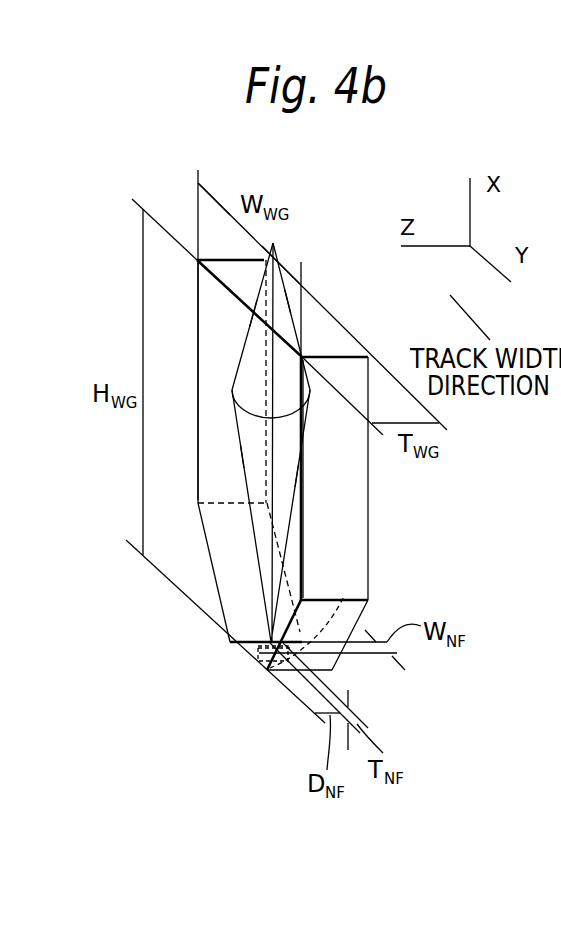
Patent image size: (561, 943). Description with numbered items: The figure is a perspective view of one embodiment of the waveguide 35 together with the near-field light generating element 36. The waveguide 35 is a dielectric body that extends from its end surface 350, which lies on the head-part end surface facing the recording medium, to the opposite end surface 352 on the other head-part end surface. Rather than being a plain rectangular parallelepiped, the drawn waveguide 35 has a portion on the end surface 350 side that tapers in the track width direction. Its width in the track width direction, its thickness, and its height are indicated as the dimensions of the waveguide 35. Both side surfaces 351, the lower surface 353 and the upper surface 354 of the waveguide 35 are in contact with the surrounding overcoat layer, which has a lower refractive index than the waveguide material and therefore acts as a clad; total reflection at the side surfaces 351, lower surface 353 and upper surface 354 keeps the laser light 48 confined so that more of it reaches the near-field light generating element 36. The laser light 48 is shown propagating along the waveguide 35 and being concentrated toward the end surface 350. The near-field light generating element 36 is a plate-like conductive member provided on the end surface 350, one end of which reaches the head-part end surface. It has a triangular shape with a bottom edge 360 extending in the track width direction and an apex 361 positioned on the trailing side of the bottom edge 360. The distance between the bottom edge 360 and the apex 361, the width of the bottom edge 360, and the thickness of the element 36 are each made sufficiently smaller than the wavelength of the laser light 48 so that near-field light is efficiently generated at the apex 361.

The waveguide 35 is at (121, 460).
The side surfaces 351 is at (225, 375).
The opposite end surface 352 is at (320, 322).
The lower surface 353 is at (335, 450).
The upper surface 354 is at (225, 520).
The end surface 350 is at (300, 672).
The bottom edge 360 is at (343, 598).
The apex 361 is at (258, 652).
The near-field light generating element 36 is at (258, 668).
The laser light 48 is at (258, 289).